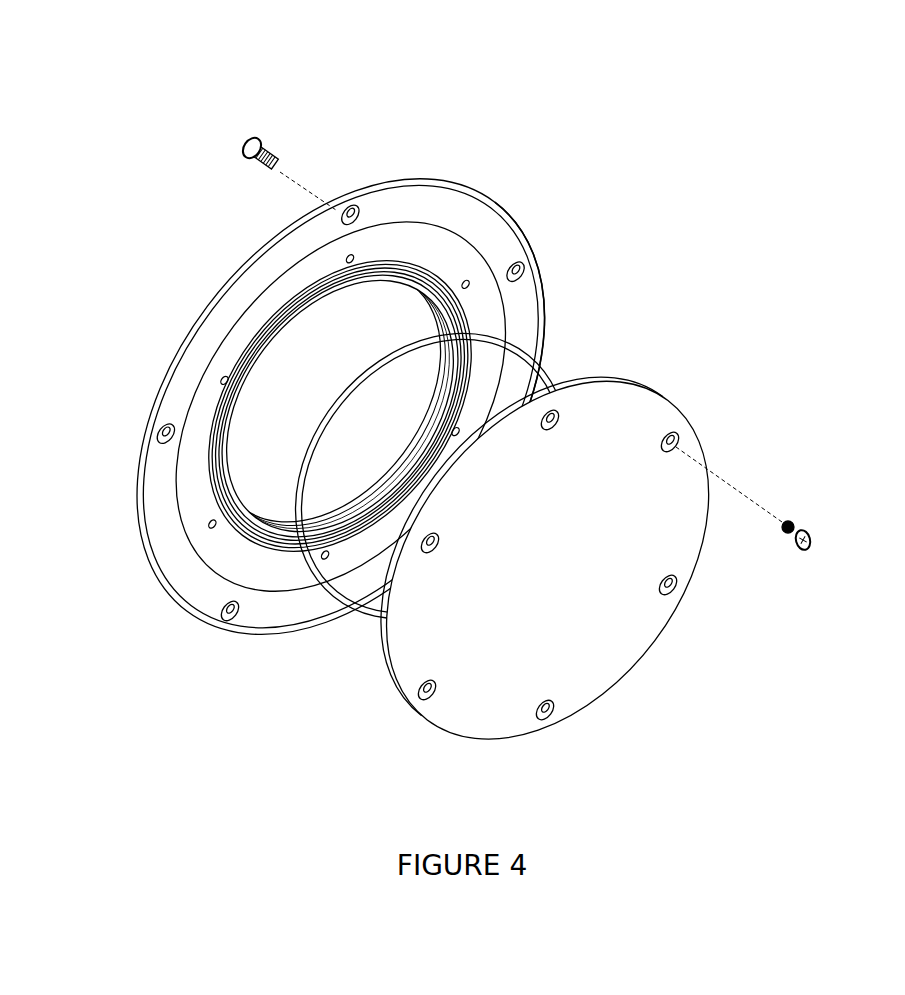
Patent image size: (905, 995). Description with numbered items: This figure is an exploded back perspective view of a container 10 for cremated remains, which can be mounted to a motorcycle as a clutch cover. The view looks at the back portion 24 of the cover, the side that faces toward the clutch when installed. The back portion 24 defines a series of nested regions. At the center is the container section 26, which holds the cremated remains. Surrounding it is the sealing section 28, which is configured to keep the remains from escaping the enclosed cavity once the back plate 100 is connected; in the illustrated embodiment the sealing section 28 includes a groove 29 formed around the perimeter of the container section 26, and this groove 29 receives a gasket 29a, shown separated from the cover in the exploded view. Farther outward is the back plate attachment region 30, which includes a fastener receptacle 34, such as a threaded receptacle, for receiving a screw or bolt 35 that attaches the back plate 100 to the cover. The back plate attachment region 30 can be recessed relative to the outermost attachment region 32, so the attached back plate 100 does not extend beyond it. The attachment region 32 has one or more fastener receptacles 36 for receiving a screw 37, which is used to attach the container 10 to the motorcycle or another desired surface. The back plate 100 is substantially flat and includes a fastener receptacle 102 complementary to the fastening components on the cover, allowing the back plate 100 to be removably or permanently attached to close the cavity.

The container 10 is at (378, 152).
The back portion 24 is at (254, 626).
The container section 26 is at (269, 349).
The sealing section 28 is at (228, 377).
The groove 29 is at (206, 474).
The gasket 29a is at (346, 614).
The back plate attachment region 30 is at (228, 563).
The attachment region 32 is at (530, 305).
The fastener receptacle 34 is at (208, 528).
The screw or bolt 35 is at (812, 540).
The fastener receptacle 36 is at (512, 268).
The screw 37 is at (242, 143).
The back plate 100 is at (612, 635).
The fastener receptacle 102 is at (556, 419).